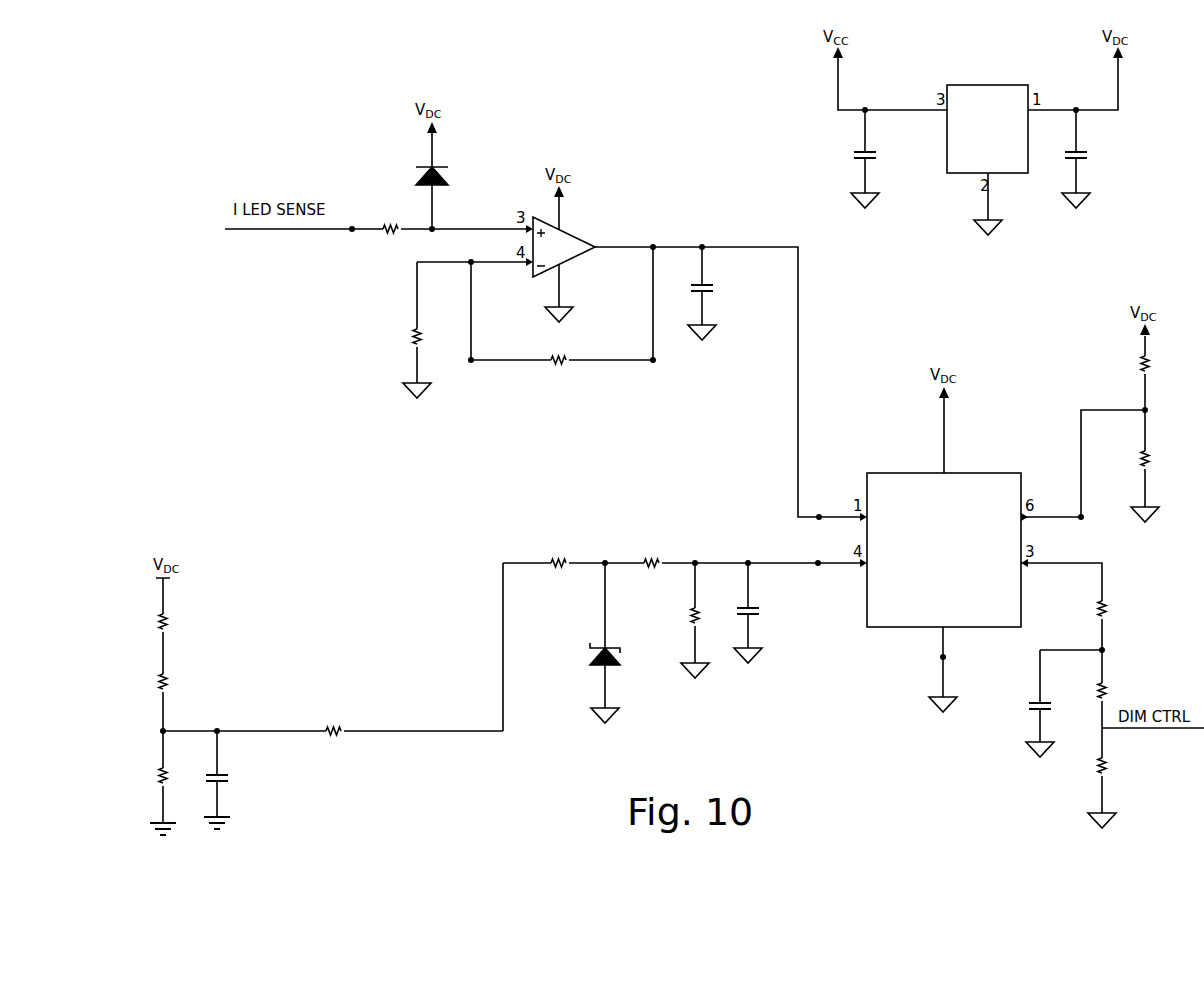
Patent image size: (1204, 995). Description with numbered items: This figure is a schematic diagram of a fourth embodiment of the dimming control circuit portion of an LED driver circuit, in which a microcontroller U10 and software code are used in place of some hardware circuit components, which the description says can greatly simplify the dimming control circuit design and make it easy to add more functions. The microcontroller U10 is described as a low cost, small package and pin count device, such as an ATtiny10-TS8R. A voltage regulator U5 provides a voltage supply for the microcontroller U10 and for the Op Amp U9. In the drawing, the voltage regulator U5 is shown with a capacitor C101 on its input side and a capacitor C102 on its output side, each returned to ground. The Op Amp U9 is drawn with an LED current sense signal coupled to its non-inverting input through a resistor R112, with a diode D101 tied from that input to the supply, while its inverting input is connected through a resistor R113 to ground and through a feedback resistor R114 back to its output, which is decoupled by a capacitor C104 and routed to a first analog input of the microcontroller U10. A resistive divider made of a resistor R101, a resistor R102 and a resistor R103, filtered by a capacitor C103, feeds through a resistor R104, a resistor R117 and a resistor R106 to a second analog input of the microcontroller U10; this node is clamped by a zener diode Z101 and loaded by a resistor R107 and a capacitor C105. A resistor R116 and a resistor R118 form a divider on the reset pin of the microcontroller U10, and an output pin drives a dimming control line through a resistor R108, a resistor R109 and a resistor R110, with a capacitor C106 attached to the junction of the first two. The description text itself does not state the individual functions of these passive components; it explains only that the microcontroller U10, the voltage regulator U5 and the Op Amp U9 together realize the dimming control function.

The resistor R101 is at (142, 624).
The resistor R102 is at (142, 684).
The resistor R103 is at (142, 778).
The resistor R104 is at (334, 721).
The resistor R106 is at (651, 553).
The resistor R107 is at (673, 617).
The resistor R108 is at (1124, 610).
The resistor R109 is at (1124, 692).
The resistor R110 is at (1124, 767).
The resistor R112 is at (391, 219).
The resistor R113 is at (396, 339).
The resistor R114 is at (557, 351).
The resistor R116 is at (1167, 365).
The resistor R117 is at (559, 553).
The resistor R118 is at (1167, 460).
The capacitor C101 is at (885, 151).
The capacitor C102 is at (1098, 151).
The capacitor C103 is at (236, 774).
The capacitor C104 is at (721, 286).
The capacitor C105 is at (768, 605).
The capacitor C106 is at (1017, 696).
The diode D101 is at (453, 181).
The zener diode Z101 is at (582, 635).
The voltage regulator U5 is at (987, 115).
The Op Amp U9 is at (564, 242).
The microcontroller U10 is at (944, 537).